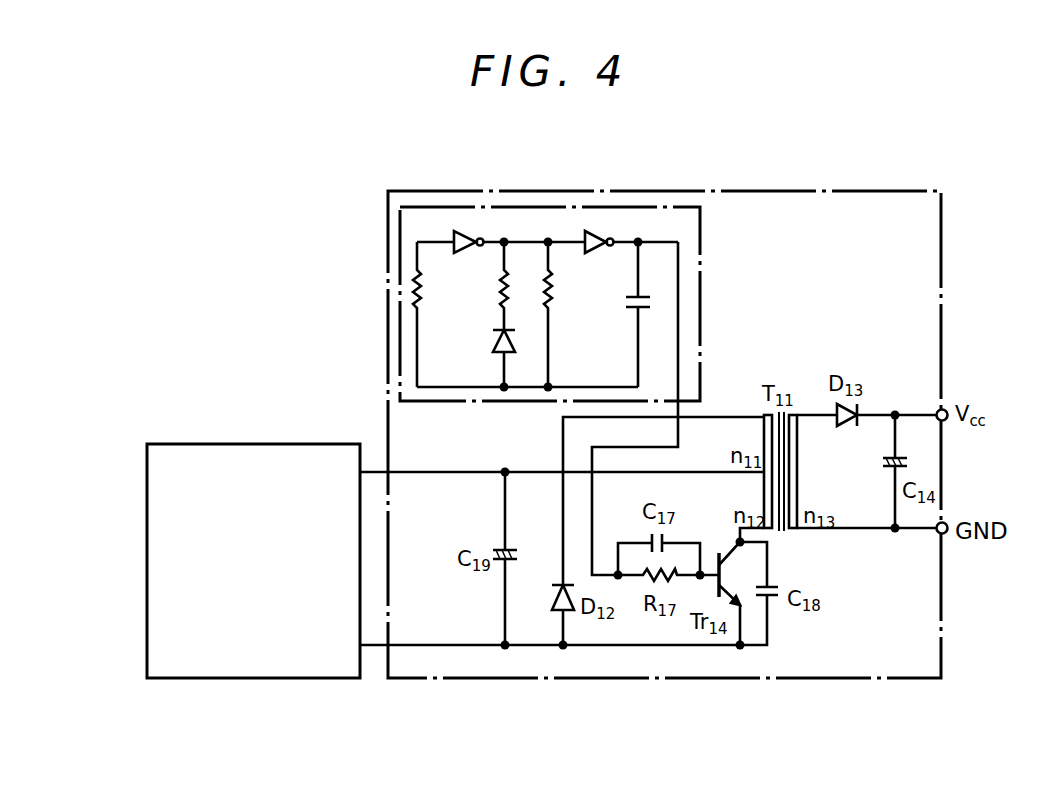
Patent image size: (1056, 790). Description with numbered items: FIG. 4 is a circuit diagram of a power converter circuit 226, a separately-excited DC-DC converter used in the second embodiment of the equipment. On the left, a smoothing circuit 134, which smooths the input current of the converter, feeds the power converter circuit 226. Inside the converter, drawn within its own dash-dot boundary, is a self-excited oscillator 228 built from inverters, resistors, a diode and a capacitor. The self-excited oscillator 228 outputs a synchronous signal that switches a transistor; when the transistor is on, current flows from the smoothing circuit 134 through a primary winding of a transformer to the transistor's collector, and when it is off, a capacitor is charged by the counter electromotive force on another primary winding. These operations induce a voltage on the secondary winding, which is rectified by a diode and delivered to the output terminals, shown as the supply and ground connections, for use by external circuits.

The smoothing circuit 134 is at (266, 678).
The power converter circuit 226 is at (943, 265).
The self-excited oscillator 228 is at (700, 351).